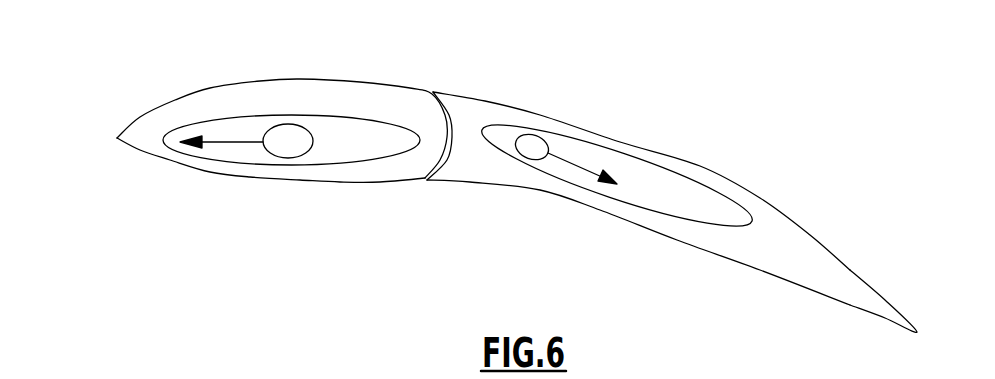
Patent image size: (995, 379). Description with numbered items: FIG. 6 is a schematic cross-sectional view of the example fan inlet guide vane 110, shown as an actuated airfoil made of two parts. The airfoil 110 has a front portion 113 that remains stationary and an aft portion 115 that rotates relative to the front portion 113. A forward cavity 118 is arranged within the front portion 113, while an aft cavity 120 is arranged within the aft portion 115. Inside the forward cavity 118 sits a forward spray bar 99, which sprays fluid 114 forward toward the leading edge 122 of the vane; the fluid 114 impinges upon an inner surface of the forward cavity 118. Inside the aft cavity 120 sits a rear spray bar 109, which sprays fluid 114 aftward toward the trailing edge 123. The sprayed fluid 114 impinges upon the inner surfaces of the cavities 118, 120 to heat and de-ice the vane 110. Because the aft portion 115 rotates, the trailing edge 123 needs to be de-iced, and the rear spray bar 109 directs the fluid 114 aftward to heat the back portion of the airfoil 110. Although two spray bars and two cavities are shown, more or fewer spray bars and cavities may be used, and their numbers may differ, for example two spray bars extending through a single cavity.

The leading edge 122 is at (117, 138).
The front portion 113 is at (325, 181).
The forward cavity 118 is at (400, 125).
The forward spray bar 99 is at (302, 124).
The fluid 114 is at (235, 140).
The fan inlet guide vane 110 is at (485, 100).
The aft portion 115 is at (513, 189).
The trailing edge 123 is at (917, 330).
The aft cavity 120 is at (598, 143).
The rear spray bar 109 is at (551, 137).